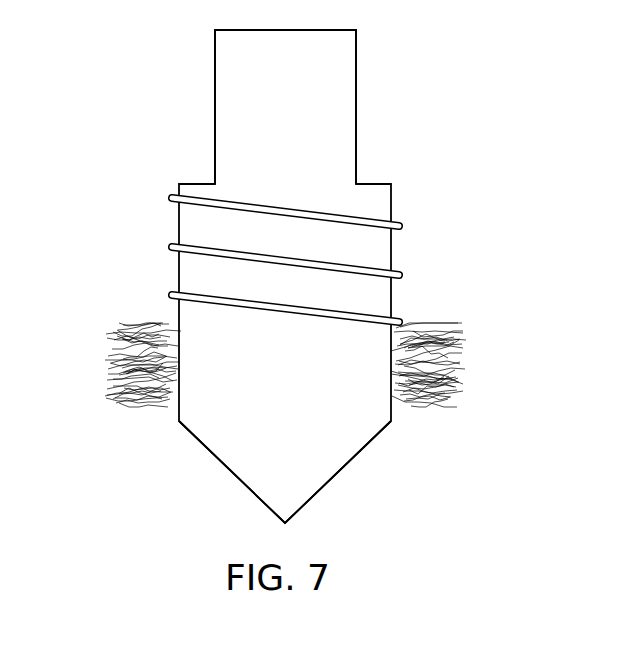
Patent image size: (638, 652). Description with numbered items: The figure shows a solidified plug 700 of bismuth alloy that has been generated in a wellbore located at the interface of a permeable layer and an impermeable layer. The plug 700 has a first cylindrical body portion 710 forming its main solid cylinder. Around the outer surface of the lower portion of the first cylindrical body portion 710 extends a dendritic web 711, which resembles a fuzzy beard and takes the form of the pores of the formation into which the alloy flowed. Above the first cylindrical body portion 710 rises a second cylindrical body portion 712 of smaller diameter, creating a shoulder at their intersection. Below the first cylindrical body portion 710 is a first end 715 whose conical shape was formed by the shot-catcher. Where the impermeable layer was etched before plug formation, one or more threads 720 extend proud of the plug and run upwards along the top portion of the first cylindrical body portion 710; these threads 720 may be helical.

The solidified plug 700 is at (326, 279).
The first cylindrical body portion 710 is at (357, 345).
The dendritic web 711 is at (462, 360).
The second cylindrical body portion 712 is at (331, 102).
The first end 715 is at (297, 487).
The threads 720 is at (170, 200).